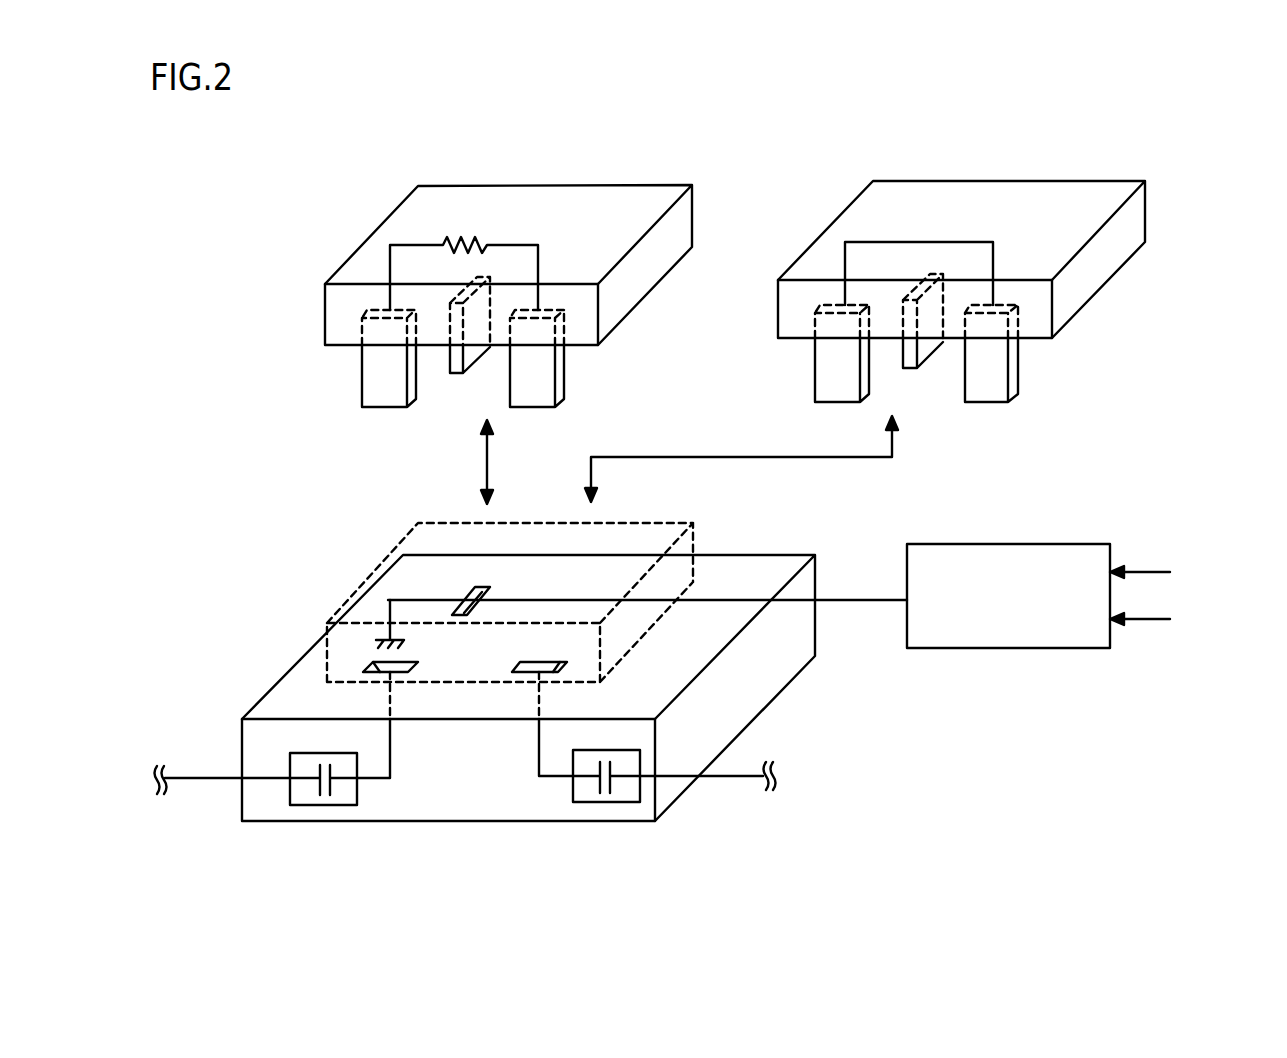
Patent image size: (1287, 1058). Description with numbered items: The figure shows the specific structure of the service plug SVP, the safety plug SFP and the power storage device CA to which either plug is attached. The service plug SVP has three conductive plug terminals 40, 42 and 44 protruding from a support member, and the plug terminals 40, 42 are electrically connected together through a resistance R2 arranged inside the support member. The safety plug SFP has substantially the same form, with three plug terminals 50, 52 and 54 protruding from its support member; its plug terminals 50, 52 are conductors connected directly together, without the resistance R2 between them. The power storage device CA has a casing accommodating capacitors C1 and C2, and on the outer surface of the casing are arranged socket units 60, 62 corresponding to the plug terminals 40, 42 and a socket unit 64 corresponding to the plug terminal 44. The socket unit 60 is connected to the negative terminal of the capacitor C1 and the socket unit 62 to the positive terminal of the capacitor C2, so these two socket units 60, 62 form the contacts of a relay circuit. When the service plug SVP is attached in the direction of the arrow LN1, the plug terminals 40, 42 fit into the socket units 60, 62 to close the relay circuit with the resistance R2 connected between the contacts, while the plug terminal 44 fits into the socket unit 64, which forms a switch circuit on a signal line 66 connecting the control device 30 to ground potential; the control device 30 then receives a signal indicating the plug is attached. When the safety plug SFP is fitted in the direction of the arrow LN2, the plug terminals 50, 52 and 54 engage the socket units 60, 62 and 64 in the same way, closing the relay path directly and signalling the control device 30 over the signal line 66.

The service plug SVP is at (577, 183).
The resistance R2 is at (462, 240).
The plug terminal 40 is at (383, 407).
The plug terminal 42 is at (533, 407).
The plug terminal 44 is at (460, 376).
The safety plug SFP is at (1030, 178).
The plug terminal 50 is at (835, 403).
The plug terminal 52 is at (987, 403).
The plug terminal 54 is at (913, 371).
The arrow LN1 is at (484, 470).
The arrow LN2 is at (895, 449).
The power storage device CA is at (467, 823).
The signal line 66 is at (861, 596).
The socket unit 64 is at (468, 600).
The socket unit 60 is at (375, 667).
The socket unit 62 is at (565, 663).
The capacitor C1 is at (324, 807).
The capacitor C2 is at (607, 803).
The control device 30 is at (1078, 650).